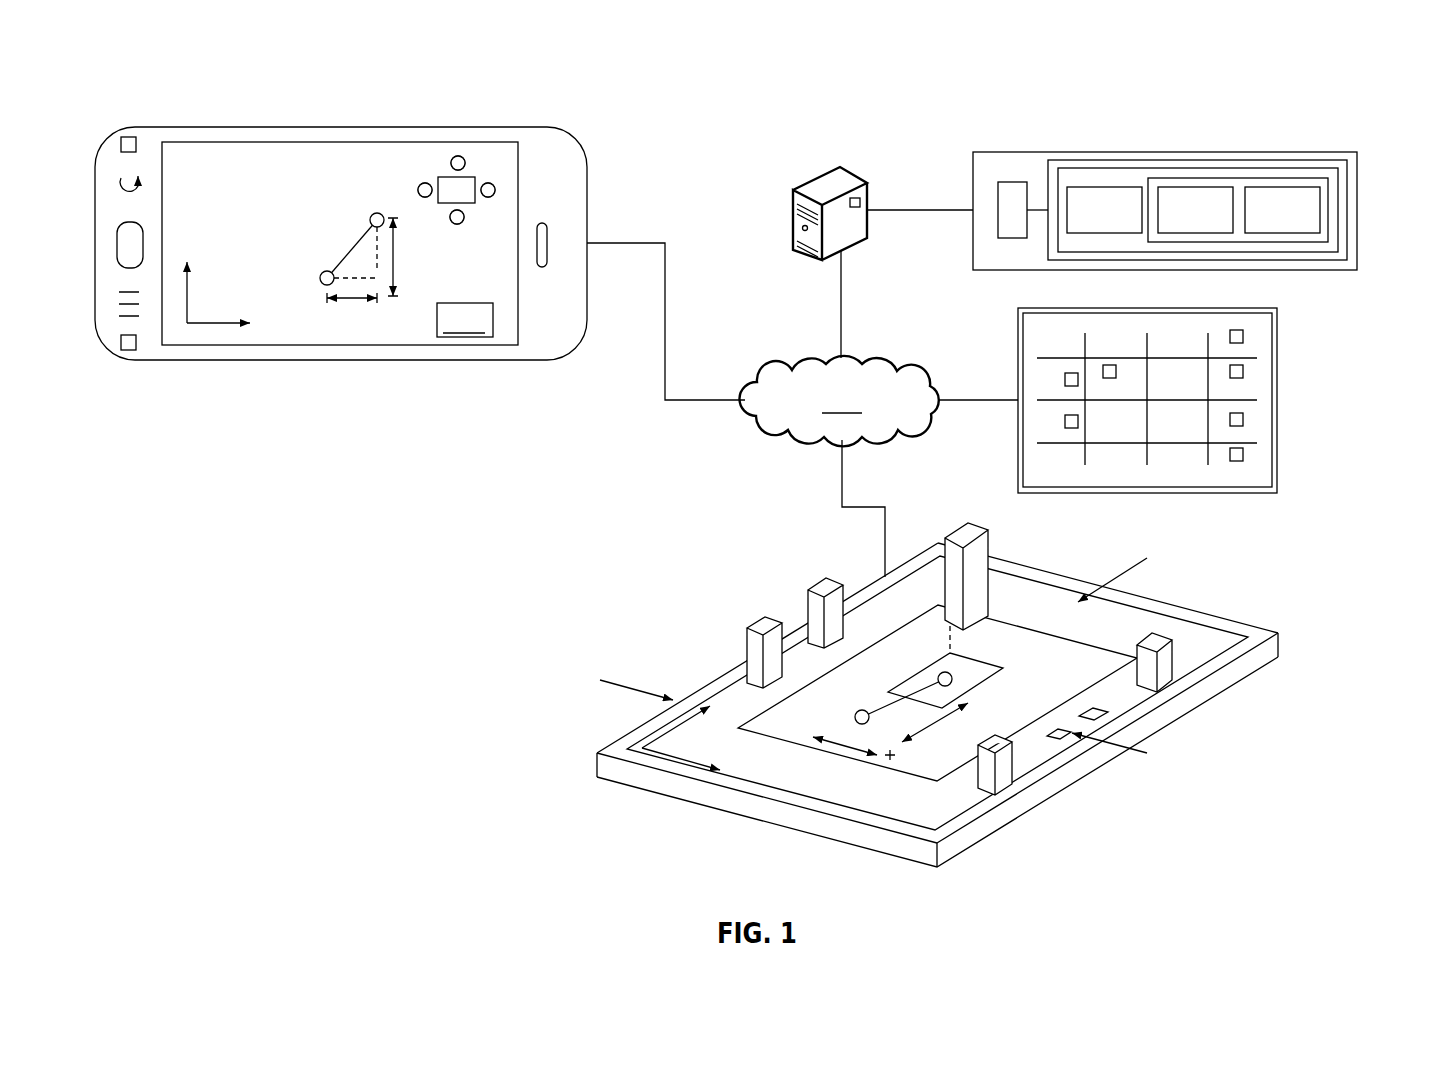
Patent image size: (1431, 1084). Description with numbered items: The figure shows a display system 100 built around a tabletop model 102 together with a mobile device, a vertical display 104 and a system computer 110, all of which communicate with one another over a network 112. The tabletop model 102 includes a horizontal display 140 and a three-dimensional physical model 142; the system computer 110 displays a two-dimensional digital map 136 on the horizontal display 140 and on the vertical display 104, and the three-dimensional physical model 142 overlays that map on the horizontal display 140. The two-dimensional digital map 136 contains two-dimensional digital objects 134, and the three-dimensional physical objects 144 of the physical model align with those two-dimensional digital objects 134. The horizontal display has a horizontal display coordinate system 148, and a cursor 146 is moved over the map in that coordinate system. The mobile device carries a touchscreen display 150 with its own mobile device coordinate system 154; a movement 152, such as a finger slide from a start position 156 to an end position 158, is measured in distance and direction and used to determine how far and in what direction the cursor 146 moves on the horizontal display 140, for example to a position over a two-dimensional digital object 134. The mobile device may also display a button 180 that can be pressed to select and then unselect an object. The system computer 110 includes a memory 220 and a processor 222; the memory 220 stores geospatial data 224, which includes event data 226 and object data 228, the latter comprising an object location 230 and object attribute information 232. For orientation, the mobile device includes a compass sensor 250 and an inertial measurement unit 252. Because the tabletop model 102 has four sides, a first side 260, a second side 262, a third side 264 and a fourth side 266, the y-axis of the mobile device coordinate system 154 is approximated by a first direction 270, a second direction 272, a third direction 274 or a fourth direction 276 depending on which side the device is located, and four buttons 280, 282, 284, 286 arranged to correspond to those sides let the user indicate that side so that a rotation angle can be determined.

The display system 100 is at (1352, 86).
The tabletop model 102 is at (573, 636).
The vertical display 104 is at (1009, 302).
The system computer 110 is at (848, 178).
The network 112 is at (838, 466).
The two-dimensional digital object 134 is at (1245, 337).
The two-dimensional digital map 136 is at (1040, 463).
The horizontal display 140 is at (990, 810).
The three-dimensional physical model 142 is at (714, 587).
The three-dimensional physical object 144 is at (762, 618).
The cursor 146 is at (981, 681).
The horizontal display coordinate system 148 is at (660, 730).
The touchscreen display 150 is at (275, 345).
The movement 152 is at (350, 246).
The mobile device coordinate system 154 is at (223, 323).
The start position 156 is at (320, 275).
The end position 158 is at (372, 214).
The button 180 is at (578, 86).
The memory 220 is at (1090, 160).
The processor 222 is at (1011, 182).
The geospatial data 224 is at (1152, 168).
The event data 226 is at (1125, 226).
The object data 228 is at (1252, 178).
The object location 230 is at (1216, 226).
The object attribute information 232 is at (1303, 226).
The compass sensor 250 is at (126, 350).
The inertial measurement unit 252 is at (131, 137).
The first side 260 is at (737, 792).
The second side 262 is at (695, 690).
The third side 264 is at (1180, 605).
The fourth side 266 is at (958, 840).
The first direction 270 is at (812, 790).
The second direction 272 is at (637, 690).
The third direction 274 is at (1147, 558).
The fourth direction 276 is at (1127, 750).
The button 280 is at (459, 224).
The button 282 is at (420, 185).
The button 284 is at (458, 156).
The button 286 is at (495, 189).